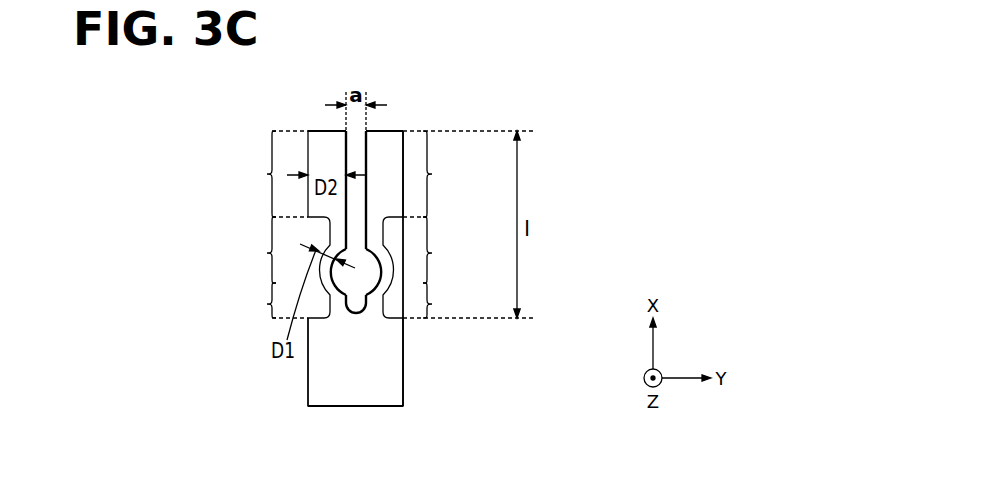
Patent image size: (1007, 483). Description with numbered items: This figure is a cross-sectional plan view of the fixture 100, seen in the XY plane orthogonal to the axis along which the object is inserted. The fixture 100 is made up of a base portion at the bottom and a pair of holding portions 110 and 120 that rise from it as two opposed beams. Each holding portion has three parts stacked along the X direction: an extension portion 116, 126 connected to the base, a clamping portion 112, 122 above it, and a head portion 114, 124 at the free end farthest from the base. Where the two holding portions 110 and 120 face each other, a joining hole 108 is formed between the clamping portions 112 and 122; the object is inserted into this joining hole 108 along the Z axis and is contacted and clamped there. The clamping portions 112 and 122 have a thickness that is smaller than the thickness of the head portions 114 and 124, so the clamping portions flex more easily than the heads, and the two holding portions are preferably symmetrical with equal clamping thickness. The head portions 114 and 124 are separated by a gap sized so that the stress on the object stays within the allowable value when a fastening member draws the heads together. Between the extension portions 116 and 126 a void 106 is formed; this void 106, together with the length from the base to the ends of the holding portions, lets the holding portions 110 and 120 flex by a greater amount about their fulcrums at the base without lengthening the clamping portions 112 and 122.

The fixture 100 is at (385, 396).
The void 106 is at (356, 316).
The joining hole 108 is at (361, 277).
The holding portion 110 is at (398, 121).
The clamping portion 112 is at (446, 250).
The head portion 114 is at (469, 174).
The extension portion 116 is at (469, 300).
The holding portion 120 is at (312, 121).
The clamping portion 122 is at (253, 250).
The head portion 124 is at (269, 174).
The extension portion 126 is at (269, 300).